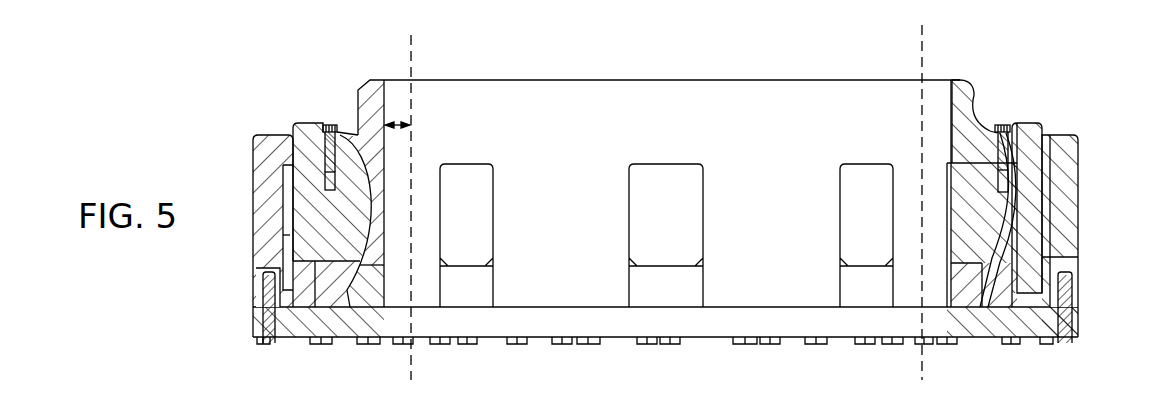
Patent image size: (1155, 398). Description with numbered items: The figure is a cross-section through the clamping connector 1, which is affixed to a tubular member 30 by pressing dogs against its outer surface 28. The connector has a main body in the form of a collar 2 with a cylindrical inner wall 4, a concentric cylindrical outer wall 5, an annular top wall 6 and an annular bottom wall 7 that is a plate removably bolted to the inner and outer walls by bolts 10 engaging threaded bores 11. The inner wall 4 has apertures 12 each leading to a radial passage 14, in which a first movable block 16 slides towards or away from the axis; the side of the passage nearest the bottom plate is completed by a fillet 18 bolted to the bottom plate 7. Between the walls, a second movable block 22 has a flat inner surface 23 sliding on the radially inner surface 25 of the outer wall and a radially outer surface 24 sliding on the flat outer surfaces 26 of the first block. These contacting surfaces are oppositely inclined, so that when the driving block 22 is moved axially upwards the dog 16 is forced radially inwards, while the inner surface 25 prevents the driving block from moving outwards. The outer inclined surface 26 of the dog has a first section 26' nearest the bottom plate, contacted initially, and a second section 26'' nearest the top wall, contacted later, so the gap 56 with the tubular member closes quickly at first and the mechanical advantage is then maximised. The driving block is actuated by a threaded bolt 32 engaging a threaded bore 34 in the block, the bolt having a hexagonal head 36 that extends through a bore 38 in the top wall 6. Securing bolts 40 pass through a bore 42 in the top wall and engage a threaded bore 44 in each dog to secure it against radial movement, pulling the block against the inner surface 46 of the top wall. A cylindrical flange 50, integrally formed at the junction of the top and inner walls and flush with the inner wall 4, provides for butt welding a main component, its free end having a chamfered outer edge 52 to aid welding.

The clamping connector 1 is at (206, 83).
The collar 2 is at (238, 252).
The cylindrical inner wall 4 is at (384, 97).
The cylindrical outer wall 5 is at (1083, 201).
The annular top wall 6 is at (1053, 138).
The annular bottom wall 7 is at (1031, 330).
The bolts 10 is at (260, 344).
The threaded bores 11 is at (268, 279).
The apertures 12 is at (704, 214).
The passage 14 is at (997, 124).
The first movable block 16 is at (648, 182).
The fillet 18 is at (370, 292).
The second movable block 22 is at (288, 268).
The flat inner surface 23 is at (288, 300).
The radially outer surface 24 is at (342, 292).
The radially inner surface 25 is at (288, 242).
The flat outer surfaces 26 is at (672, 263).
The first section 26' is at (340, 96).
The second section 26'' is at (366, 79).
The outer surface 28 is at (412, 57).
The tubular member 30 is at (930, 30).
The threaded bolt 32 is at (303, 200).
The threaded bore 34 is at (314, 262).
The hexagonal head 36 is at (295, 127).
The bore 38 is at (293, 143).
The securing bolts 40 is at (331, 124).
The bore 42 is at (323, 160).
The threaded bore 44 is at (327, 180).
The inner surface 46 is at (993, 162).
The cylindrical flange 50 is at (960, 97).
The chamfered outer edge 52 is at (984, 133).
The gap 56 is at (396, 120).